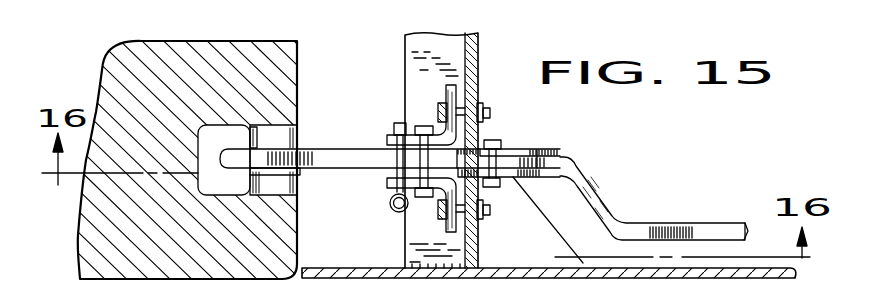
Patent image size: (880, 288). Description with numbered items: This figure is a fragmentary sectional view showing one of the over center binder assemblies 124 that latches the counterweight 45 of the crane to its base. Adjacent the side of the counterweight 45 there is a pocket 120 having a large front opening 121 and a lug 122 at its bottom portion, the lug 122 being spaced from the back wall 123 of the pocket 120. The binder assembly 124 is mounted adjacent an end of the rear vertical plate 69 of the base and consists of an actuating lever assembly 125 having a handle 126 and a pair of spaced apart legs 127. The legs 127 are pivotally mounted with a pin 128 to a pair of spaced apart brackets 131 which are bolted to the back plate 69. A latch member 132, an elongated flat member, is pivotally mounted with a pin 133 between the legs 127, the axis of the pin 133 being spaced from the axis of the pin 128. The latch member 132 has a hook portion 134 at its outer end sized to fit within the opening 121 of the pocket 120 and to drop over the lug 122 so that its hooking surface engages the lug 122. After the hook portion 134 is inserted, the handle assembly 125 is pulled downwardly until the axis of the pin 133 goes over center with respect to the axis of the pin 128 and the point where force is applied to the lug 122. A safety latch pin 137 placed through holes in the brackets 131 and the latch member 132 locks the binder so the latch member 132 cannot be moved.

The counterweight 45 is at (80, 233).
The pocket 120 is at (220, 133).
The back wall 123 is at (201, 150).
The lug 122 is at (268, 143).
The front opening 121 is at (274, 188).
The latch member 132 is at (356, 160).
The hook portion 134 is at (300, 177).
The vertical plate 69 is at (477, 62).
The pin 128 is at (423, 127).
The brackets 131 is at (394, 123).
The safety latch pin 137 is at (399, 213).
The over center binder assembly 124 is at (523, 129).
The pin 133 is at (502, 190).
The legs 127 is at (516, 152).
The actuating lever assembly 125 is at (566, 148).
The handle 126 is at (648, 225).